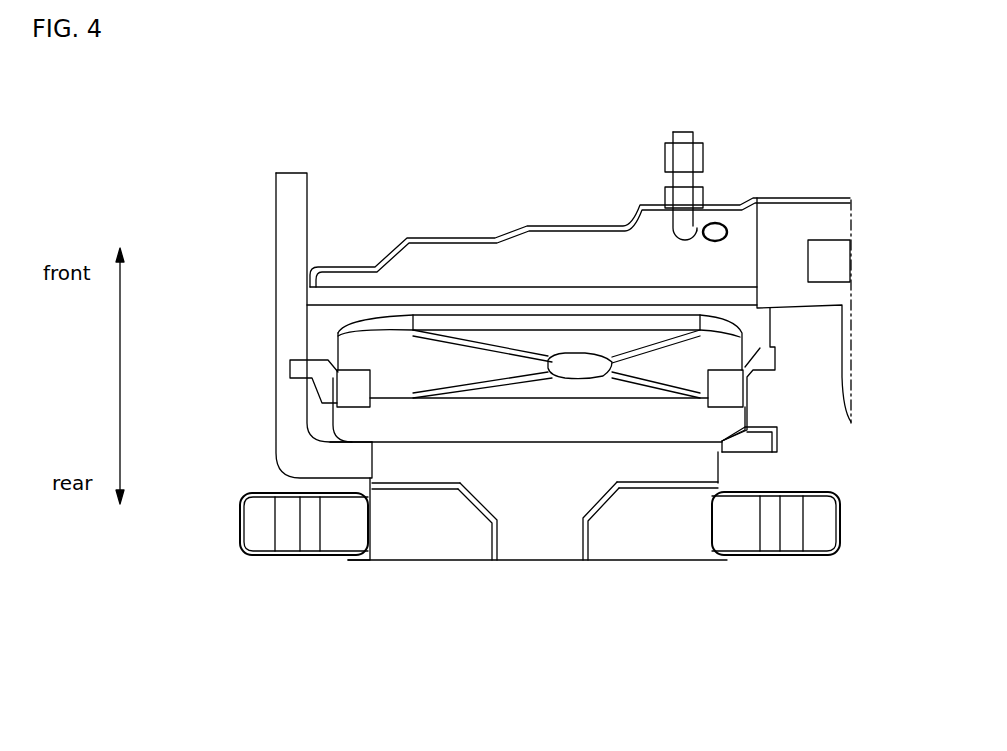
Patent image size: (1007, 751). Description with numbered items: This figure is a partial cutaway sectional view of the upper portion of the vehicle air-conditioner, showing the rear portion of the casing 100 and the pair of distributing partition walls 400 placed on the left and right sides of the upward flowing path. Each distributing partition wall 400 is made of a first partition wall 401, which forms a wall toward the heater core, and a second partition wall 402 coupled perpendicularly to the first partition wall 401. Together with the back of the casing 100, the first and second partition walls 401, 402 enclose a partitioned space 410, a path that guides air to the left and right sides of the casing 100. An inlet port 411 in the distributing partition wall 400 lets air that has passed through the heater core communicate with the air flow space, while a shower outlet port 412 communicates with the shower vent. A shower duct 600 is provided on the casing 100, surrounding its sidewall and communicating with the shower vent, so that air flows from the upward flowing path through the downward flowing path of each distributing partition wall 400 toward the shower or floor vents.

The casing 100 is at (568, 248).
The distributing partition wall 400 is at (540, 586).
The first partition wall 401 is at (478, 506).
The second partition wall 402 is at (413, 486).
The partitioned space 410 is at (390, 517).
The inlet port 411 is at (580, 548).
The shower outlet port 412 is at (378, 516).
The shower duct 600 is at (292, 537).